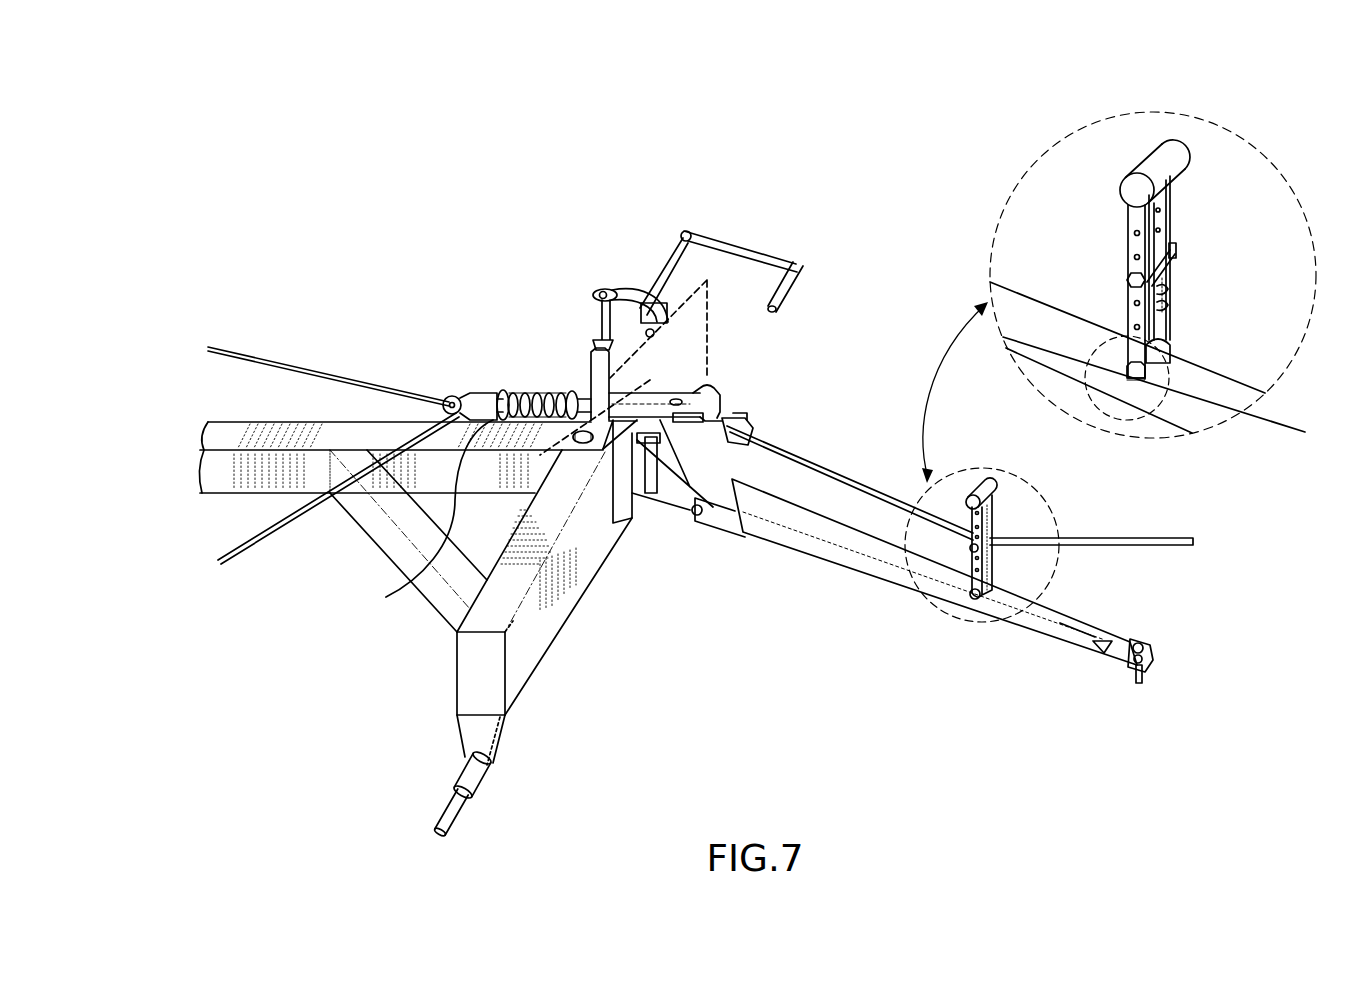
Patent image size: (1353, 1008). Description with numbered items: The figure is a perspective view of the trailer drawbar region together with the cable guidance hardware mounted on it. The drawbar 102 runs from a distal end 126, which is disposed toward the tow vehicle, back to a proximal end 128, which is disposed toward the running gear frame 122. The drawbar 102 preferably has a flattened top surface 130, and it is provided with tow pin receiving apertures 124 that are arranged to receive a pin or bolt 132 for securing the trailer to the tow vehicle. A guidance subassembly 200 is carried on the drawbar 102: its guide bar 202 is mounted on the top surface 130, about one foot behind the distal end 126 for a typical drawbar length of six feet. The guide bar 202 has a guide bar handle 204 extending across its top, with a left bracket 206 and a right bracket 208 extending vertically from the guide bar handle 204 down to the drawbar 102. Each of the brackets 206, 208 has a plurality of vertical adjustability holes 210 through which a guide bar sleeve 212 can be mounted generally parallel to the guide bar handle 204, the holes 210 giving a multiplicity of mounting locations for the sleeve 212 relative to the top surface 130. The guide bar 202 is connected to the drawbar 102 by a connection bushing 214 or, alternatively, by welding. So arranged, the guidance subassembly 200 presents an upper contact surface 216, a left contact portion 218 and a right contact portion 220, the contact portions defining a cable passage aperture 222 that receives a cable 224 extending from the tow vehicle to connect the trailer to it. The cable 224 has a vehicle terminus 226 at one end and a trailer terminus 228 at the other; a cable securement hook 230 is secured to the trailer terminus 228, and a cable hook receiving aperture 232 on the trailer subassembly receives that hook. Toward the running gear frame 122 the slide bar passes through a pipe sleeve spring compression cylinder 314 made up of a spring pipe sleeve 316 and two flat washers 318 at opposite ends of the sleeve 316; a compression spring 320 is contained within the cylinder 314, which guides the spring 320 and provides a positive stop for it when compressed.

The drawbar 102 is at (872, 568).
The running gear frame 122 is at (537, 622).
The tow pin receiving apertures 124 is at (1142, 638).
The distal end 126 is at (1060, 652).
The proximal end 128 is at (745, 537).
The flattened top surface 130 is at (825, 520).
The pin or bolt 132 is at (1146, 683).
The guidance subassembly 200 is at (1038, 526).
The guide bar 202 is at (1003, 500).
The guide bar handle 204 is at (1183, 158).
The left bracket 206 is at (1170, 196).
The right bracket 208 is at (1128, 228).
The vertical adjustability holes 210 is at (1170, 287).
The guide bar sleeve 212 is at (1172, 245).
The connection bushing 214 is at (1160, 360).
The upper contact surface 216 is at (1127, 282).
The left contact portion 218 is at (1172, 288).
The right contact portion 220 is at (1082, 400).
The cable passage aperture 222 is at (1172, 321).
The cable 224 is at (838, 475).
The vehicle terminus 226 is at (1195, 542).
The trailer terminus 228 is at (757, 437).
The cable securement hook 230 is at (712, 395).
The cable hook receiving aperture 232 is at (683, 422).
The pipe sleeve spring compression cylinder 314 is at (533, 393).
The spring pipe sleeve 316 is at (518, 393).
The flat washers 318 is at (500, 392).
The compression spring 320 is at (350, 484).